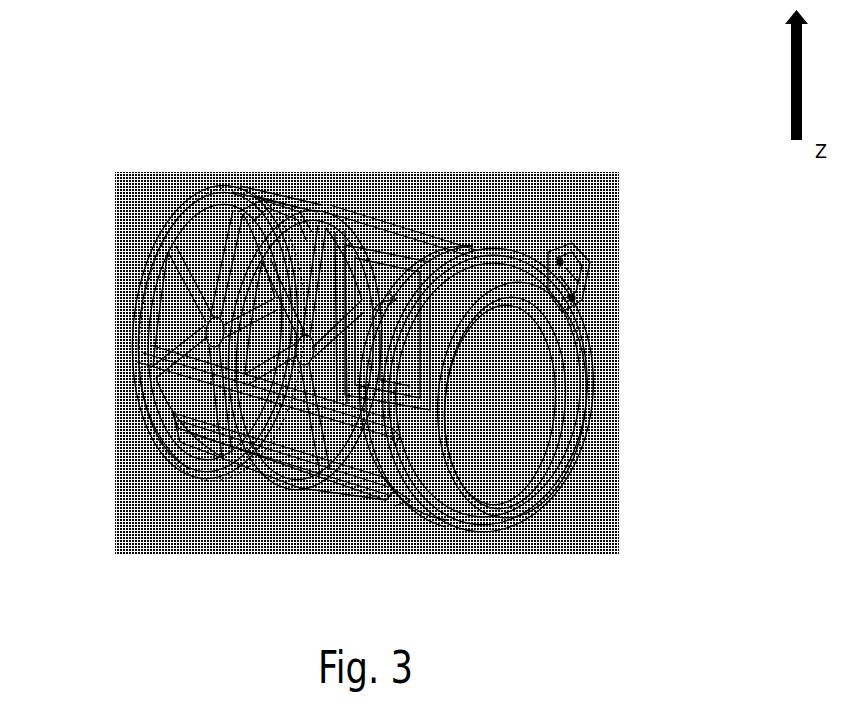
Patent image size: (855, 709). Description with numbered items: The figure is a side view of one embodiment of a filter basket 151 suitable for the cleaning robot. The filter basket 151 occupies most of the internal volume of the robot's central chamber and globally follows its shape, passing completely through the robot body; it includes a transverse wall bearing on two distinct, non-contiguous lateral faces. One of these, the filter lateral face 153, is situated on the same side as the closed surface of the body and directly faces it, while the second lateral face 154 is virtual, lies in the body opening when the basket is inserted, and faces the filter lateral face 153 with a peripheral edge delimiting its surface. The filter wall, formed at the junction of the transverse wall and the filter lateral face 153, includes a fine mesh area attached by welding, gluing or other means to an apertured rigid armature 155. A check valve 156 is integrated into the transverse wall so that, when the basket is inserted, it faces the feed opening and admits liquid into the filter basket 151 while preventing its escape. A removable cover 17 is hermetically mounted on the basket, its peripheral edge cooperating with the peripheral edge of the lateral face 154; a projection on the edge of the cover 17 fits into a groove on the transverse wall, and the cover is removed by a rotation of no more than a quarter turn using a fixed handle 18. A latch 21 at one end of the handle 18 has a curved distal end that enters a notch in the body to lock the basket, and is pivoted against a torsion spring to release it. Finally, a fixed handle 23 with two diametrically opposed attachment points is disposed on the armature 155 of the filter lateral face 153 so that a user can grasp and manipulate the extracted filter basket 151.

The removable cover 17 is at (581, 407).
The holding means 18 is at (505, 440).
The latch 21 is at (573, 289).
The holding means 23 is at (217, 254).
The filter basket 151 is at (146, 440).
The filter lateral face 153 is at (148, 241).
The second lateral face 154 is at (340, 340).
The apertured rigid armature 155 is at (248, 218).
The check valve 156 is at (253, 457).